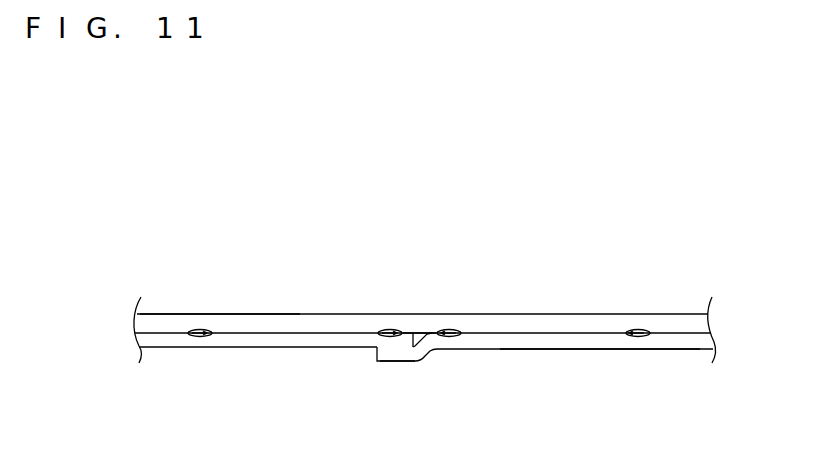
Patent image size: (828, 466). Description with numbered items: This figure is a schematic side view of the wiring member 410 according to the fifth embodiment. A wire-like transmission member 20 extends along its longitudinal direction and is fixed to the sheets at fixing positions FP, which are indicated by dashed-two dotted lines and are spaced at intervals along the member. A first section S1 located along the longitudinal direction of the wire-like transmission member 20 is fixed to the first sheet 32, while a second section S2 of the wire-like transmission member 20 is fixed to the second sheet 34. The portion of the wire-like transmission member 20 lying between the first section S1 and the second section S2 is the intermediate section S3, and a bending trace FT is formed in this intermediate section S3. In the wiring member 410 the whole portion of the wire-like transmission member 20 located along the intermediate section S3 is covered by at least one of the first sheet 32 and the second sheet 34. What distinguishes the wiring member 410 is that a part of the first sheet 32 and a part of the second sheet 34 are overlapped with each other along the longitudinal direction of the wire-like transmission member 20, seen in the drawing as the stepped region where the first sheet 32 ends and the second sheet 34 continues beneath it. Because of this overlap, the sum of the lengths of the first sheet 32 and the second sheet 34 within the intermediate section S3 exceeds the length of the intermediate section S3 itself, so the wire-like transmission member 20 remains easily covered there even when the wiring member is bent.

The wiring member 410 is at (228, 171).
The wire-like transmission member 20 is at (592, 312).
The first sheet 32 is at (260, 350).
The second sheet 34 is at (416, 361).
The first section S1 is at (239, 305).
The second section S2 is at (580, 352).
The intermediate section S3 is at (403, 366).
The fixing position FP is at (389, 324).
The bending trace FT is at (418, 323).